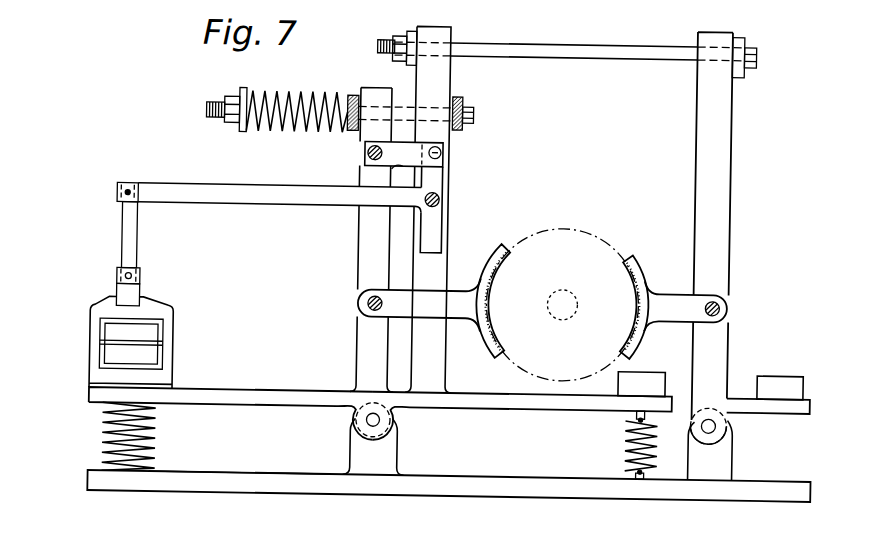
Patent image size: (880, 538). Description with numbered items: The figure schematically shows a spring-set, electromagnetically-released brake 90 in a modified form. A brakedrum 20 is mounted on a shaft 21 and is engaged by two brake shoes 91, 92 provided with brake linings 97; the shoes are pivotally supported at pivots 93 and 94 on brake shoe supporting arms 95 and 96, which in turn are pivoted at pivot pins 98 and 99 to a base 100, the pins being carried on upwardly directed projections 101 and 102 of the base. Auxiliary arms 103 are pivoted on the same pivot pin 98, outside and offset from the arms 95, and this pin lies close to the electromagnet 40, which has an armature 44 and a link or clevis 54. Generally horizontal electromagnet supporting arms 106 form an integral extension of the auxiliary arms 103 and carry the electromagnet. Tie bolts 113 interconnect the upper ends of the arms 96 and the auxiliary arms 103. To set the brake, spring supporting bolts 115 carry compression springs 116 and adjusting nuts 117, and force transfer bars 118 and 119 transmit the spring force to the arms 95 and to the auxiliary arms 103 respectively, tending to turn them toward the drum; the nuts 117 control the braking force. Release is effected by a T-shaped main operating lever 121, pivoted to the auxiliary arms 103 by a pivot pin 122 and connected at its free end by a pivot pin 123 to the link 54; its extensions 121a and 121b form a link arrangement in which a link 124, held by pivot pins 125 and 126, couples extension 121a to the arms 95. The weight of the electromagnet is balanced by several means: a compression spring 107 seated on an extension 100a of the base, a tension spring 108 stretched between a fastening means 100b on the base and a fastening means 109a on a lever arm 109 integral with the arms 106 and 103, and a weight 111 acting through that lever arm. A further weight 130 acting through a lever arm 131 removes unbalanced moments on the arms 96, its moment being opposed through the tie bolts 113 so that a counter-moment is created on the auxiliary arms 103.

The adjusting nut 117 is at (227, 94).
The compression spring 116 is at (241, 85).
The spring supporting bolt 115 is at (290, 86).
The cross bar or force transfer bar 118 is at (348, 89).
The tie bolt 113 is at (497, 43).
The auxiliary arm 103 is at (435, 66).
The cross bar or force transfer bar 119 is at (460, 93).
The pivot pin 125 is at (366, 147).
The link 124 is at (399, 155).
The pivot pin 126 is at (437, 146).
The extension of the main operating lever 121a is at (431, 167).
The pivot pin 122 is at (442, 194).
The extension of the main operating lever 121b is at (430, 232).
The main operating lever 121 is at (208, 188).
The pivot pin 123 is at (124, 189).
The link or clevis 54 is at (119, 230).
The armature 44 is at (114, 273).
The electromagnet 40 is at (91, 323).
The brake shoe supporting arm 95 is at (359, 231).
The pivot 93 is at (358, 298).
The brake shoe 91 is at (491, 243).
The brake lining 97 is at (508, 246).
The brakedrum 20 is at (589, 224).
The shaft 21 is at (571, 284).
The brake shoe 92 is at (640, 252).
The pivot 94 is at (728, 300).
The brake shoe supporting arm 96 is at (722, 217).
The electromagnet supporting arm 106 is at (225, 391).
The compression spring 107 is at (101, 430).
The pivot pin 98 is at (367, 416).
The upwardly directed projection 101 is at (351, 443).
The extension of the base 100a is at (271, 470).
The lever arm 109 is at (516, 401).
The fastening means 109a is at (629, 411).
The tension spring 108 is at (629, 434).
The fastening means 100b is at (632, 459).
The base 100 is at (589, 483).
The weight 111 is at (637, 370).
The weight 130 is at (775, 370).
The lever arm 131 is at (794, 403).
The pivot pin 99 is at (716, 419).
The upwardly directed projection 102 is at (721, 452).
The brake 90 is at (480, 514).